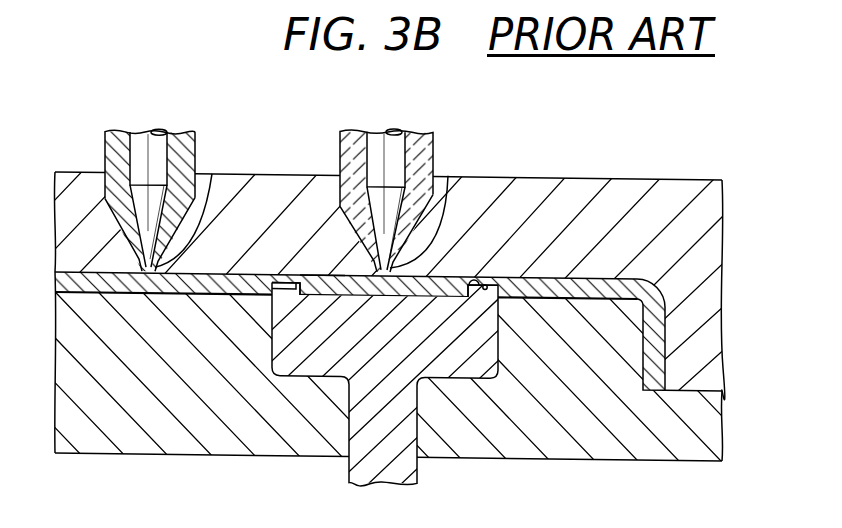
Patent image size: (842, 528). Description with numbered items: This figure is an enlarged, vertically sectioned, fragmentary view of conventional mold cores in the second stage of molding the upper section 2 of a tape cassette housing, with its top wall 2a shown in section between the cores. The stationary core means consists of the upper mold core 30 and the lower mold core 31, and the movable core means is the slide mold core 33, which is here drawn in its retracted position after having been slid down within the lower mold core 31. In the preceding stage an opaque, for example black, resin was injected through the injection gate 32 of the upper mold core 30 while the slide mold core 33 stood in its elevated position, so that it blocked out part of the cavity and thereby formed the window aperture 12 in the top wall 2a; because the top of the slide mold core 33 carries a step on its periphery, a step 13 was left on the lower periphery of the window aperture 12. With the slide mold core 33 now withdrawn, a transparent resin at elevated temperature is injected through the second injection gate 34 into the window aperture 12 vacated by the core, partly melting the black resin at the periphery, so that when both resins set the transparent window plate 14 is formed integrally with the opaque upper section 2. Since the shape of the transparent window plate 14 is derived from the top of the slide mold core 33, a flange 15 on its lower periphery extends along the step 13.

The upper section 2 is at (612, 270).
The top wall 2a is at (553, 284).
The window aperture 12 is at (463, 272).
The step 13 is at (482, 280).
The transparent window plate 14 is at (321, 269).
The flange 15 is at (288, 283).
The upper mold core 30 is at (242, 185).
The lower mold core 31 is at (217, 398).
The injection gate 32 is at (213, 171).
The slide mold core 33 is at (325, 345).
The second injection gate 34 is at (448, 171).